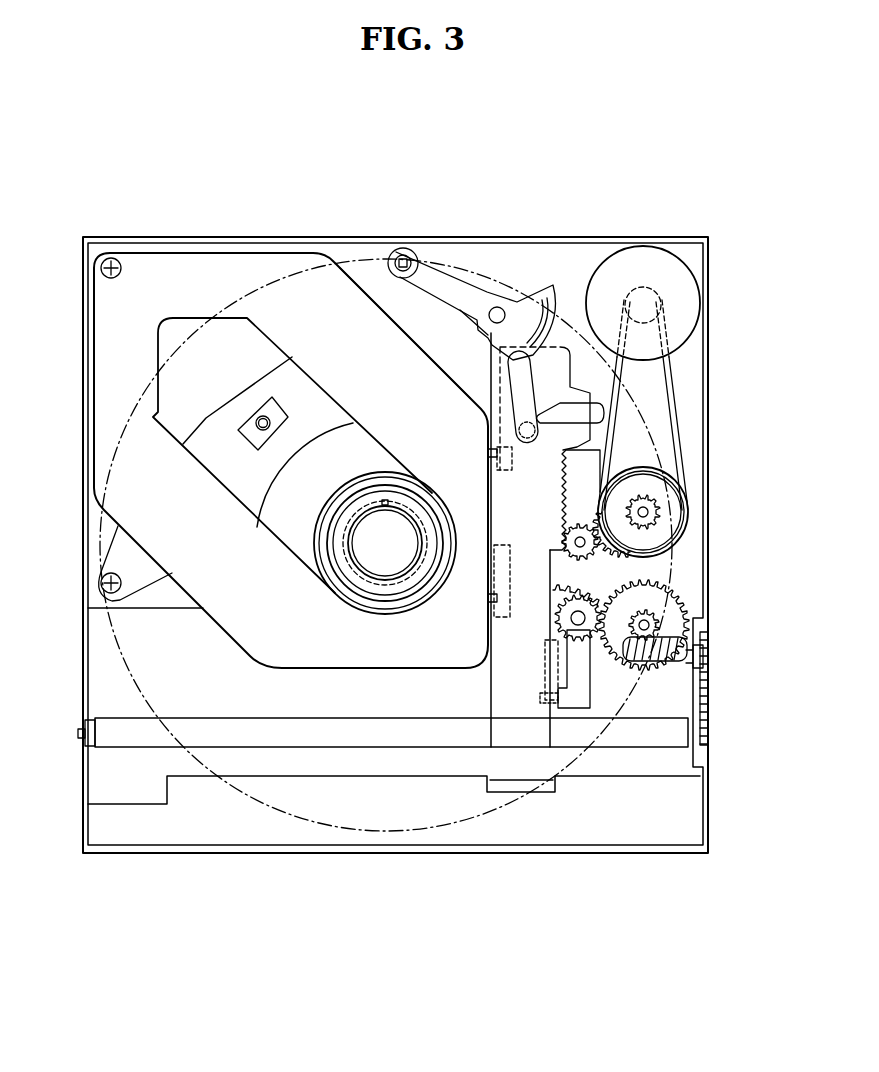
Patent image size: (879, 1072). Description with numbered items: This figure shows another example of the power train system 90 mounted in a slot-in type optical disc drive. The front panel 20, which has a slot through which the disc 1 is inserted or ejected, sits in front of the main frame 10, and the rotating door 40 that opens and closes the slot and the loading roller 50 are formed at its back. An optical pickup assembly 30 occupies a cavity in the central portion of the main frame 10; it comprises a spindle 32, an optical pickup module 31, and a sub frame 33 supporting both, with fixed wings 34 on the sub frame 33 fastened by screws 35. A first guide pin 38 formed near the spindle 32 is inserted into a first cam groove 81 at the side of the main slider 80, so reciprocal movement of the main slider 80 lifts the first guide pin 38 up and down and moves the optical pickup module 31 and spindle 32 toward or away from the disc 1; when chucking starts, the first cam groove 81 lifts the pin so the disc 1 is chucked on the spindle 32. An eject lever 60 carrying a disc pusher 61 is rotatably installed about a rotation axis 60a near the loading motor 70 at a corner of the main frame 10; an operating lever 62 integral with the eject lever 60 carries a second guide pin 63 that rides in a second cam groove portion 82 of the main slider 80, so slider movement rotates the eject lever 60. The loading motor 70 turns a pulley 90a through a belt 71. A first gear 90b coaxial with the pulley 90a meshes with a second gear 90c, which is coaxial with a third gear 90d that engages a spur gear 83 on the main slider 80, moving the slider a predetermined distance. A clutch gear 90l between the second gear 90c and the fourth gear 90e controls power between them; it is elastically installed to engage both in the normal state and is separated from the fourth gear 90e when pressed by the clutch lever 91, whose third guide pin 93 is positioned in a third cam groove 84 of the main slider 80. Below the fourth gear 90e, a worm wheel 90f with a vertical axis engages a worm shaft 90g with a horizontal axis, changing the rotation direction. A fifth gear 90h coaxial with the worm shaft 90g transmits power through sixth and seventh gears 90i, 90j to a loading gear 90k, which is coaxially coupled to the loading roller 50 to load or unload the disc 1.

The disc 1 is at (357, 262).
The main frame 10 is at (224, 229).
The front panel 20 is at (573, 850).
The optical pickup assembly 30 is at (209, 626).
The optical pickup module 31 is at (260, 416).
The spindle 32 is at (367, 523).
The sub frame 33 is at (413, 352).
The fixed wings 34 is at (115, 550).
The screws 35 is at (113, 257).
The first guide pin 38 is at (498, 453).
The rotating door 40 is at (501, 830).
The loading roller 50 is at (226, 725).
The eject lever 60 is at (440, 280).
The rotation axis 60a is at (497, 307).
The disc pusher 61 is at (405, 255).
The operating lever 62 is at (500, 385).
The second guide pin 63 is at (525, 431).
The loading motor 70 is at (644, 262).
The belt 71 is at (682, 390).
The main slider 80 is at (486, 681).
The first cam groove 81 is at (506, 471).
The second cam groove portion 82 is at (578, 410).
The spur gear 83 is at (568, 465).
The third cam groove 84 is at (545, 656).
The power train system 90 is at (760, 490).
The pulley 90a is at (672, 488).
The first gear 90b is at (656, 510).
The second gear 90c is at (653, 539).
The third gear 90d is at (598, 552).
The fourth gear 90e is at (672, 585).
The worm wheel 90f is at (660, 625).
The worm shaft 90g is at (690, 666).
The fifth gear 90h is at (704, 650).
The sixth gear 90i is at (706, 688).
The seventh gear 90j is at (706, 708).
The loading gear 90k is at (706, 736).
The clutch gear 90l is at (590, 607).
The clutch lever 91 is at (577, 709).
The third guide pin 93 is at (540, 698).